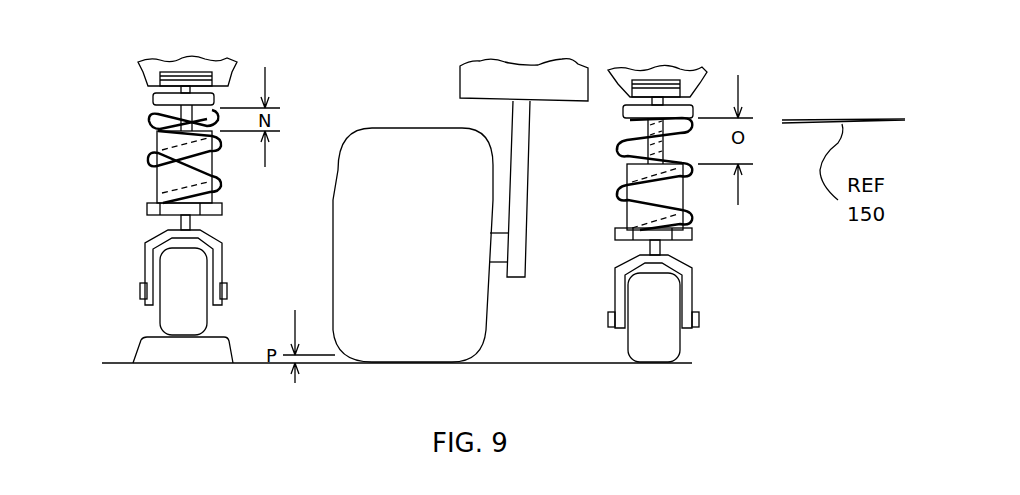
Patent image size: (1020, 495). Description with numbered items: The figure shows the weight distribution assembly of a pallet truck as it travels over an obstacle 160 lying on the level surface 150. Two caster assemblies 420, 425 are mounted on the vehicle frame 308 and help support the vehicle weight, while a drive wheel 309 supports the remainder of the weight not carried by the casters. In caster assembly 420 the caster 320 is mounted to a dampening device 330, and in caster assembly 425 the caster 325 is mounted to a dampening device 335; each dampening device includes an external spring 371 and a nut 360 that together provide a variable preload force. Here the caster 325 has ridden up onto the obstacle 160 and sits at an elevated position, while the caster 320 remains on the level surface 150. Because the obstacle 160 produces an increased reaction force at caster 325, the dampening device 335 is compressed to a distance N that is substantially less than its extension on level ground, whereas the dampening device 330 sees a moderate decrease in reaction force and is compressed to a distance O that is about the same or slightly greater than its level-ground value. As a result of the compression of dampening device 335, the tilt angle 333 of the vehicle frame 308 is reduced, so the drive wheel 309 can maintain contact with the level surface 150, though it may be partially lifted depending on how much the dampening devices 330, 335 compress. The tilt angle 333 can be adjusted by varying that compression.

The level surface 150 is at (549, 365).
The obstacle 160 is at (140, 343).
The vehicle frame 308 is at (141, 84).
The drive wheel 309 is at (338, 178).
The caster 320 is at (628, 290).
The caster 325 is at (222, 277).
The dampening device 330 is at (603, 227).
The tilt angle 333 is at (793, 163).
The dampening device 335 is at (240, 192).
The nut 360 is at (147, 208).
The external spring 371 is at (155, 125).
The caster assembly 420 is at (738, 268).
The caster assembly 425 is at (102, 245).